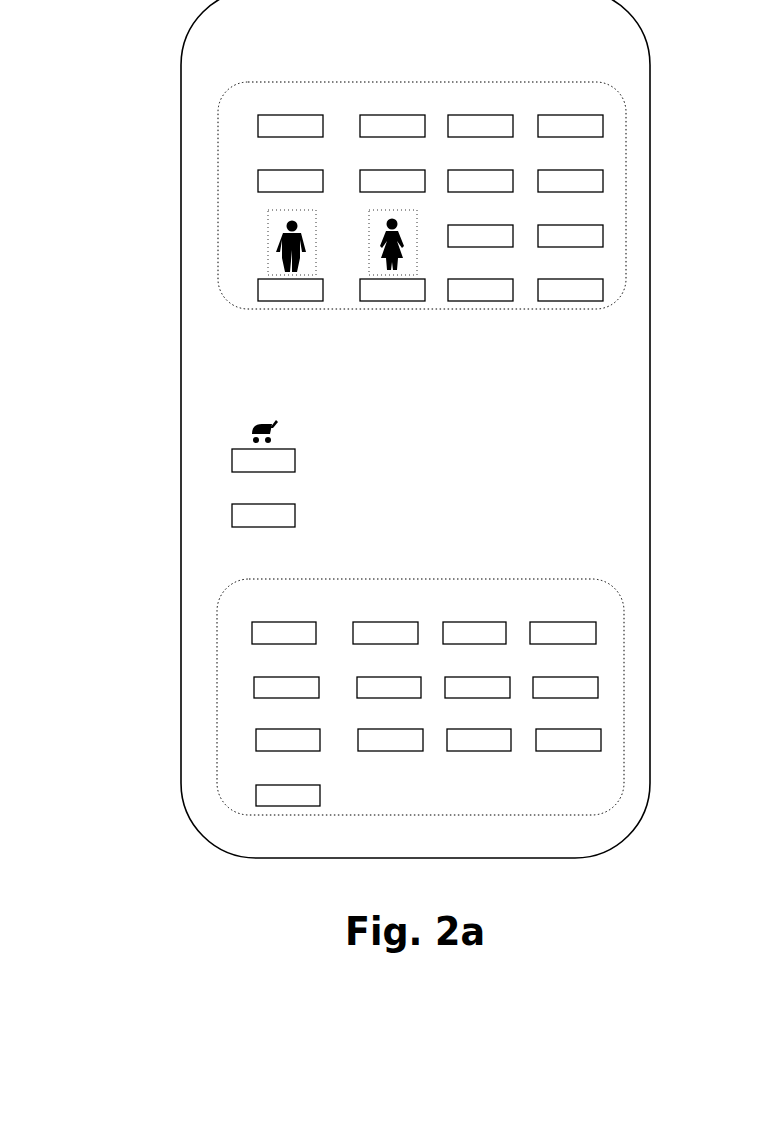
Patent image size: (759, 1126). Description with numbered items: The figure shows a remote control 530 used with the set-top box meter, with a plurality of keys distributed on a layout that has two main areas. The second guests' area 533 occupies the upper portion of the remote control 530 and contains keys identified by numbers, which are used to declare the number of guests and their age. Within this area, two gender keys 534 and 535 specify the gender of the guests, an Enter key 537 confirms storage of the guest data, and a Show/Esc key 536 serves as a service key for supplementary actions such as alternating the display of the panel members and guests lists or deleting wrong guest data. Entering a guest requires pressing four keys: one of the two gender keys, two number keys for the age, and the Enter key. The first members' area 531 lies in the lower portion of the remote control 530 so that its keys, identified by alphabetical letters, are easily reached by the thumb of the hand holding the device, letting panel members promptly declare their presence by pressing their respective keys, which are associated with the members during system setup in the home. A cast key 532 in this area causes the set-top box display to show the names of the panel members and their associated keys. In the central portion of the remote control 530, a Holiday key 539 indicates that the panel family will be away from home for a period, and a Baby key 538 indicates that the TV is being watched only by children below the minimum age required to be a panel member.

The remote control 530 is at (153, 102).
The first members' area 531 is at (338, 709).
The cast key 532 is at (280, 795).
The second guests' area 533 is at (383, 185).
The gender key 534 is at (270, 289).
The gender key 535 is at (384, 287).
The Show/Esc key 536 is at (600, 287).
The Enter key 537 is at (485, 297).
The Baby key 538 is at (232, 462).
The Holiday key 539 is at (232, 516).